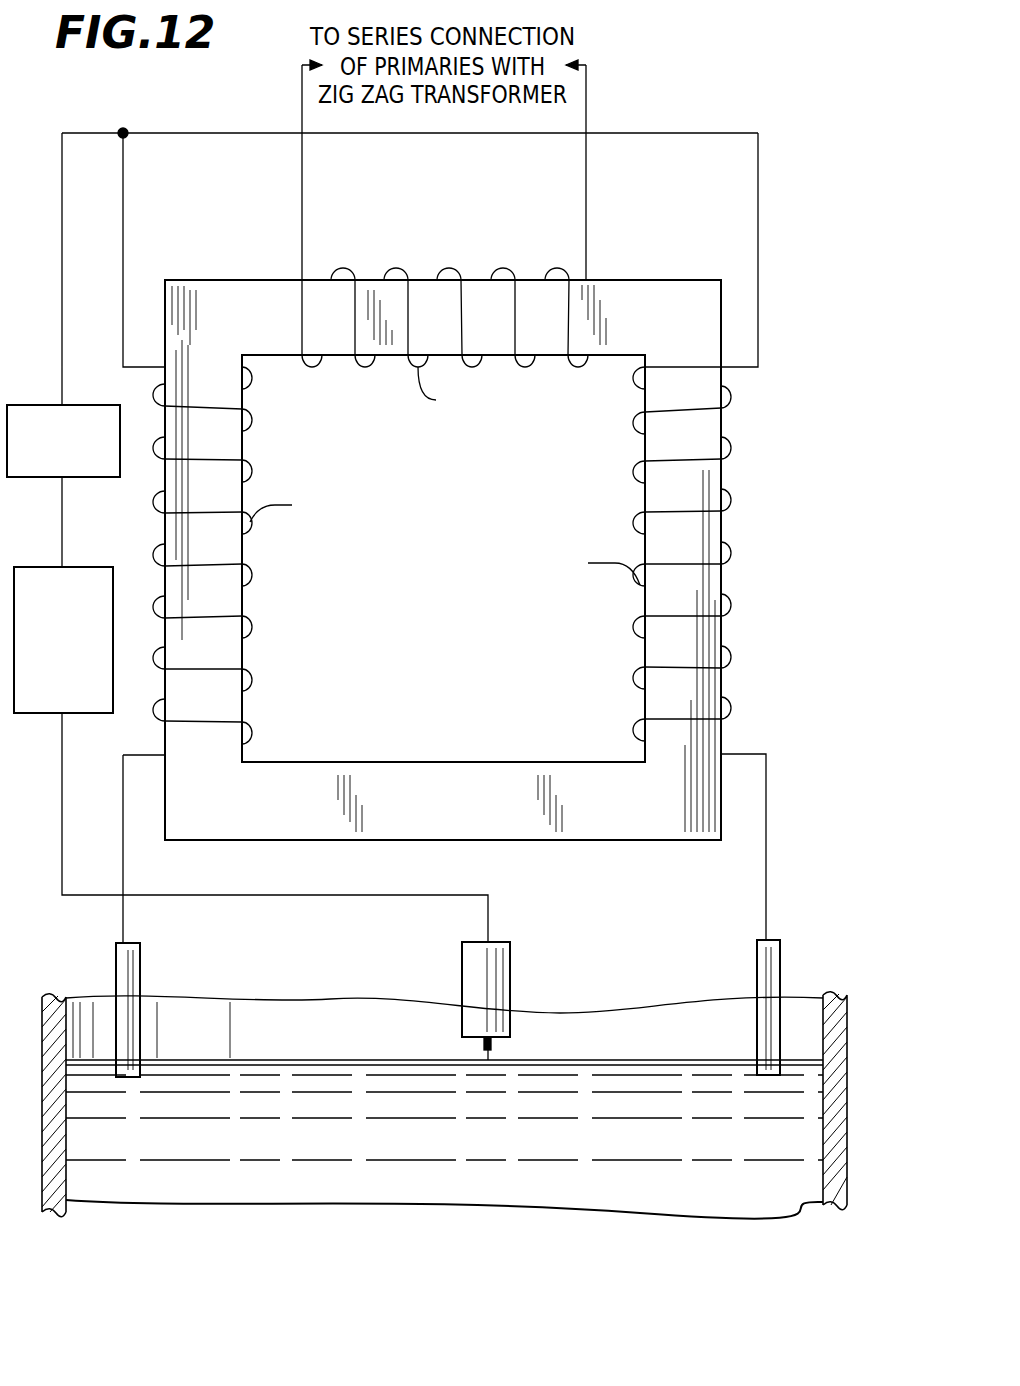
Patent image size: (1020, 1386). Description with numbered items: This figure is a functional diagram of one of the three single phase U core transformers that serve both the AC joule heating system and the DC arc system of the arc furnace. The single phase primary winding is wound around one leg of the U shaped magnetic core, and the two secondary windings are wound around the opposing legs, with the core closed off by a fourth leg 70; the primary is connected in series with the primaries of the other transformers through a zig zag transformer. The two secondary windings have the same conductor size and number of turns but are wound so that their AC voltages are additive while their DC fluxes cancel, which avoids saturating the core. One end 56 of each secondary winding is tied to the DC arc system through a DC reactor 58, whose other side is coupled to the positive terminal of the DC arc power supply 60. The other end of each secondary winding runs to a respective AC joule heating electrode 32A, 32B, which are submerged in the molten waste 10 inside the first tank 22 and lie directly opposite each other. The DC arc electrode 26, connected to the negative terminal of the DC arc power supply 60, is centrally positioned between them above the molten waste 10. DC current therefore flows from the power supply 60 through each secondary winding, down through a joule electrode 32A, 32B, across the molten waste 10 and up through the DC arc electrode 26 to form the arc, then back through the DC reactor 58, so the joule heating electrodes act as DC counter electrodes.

The molten waste 10 is at (458, 1154).
The first tank 22 is at (36, 1205).
The DC arc electrode 26 is at (513, 973).
The AC joule heating electrode 32A is at (143, 975).
The AC joule heating electrode 32B is at (755, 975).
The end of secondary winding 56 is at (123, 250).
The DC reactor 58 is at (73, 477).
The DC arc power supply 60 is at (45, 713).
The fourth leg 70 is at (730, 760).